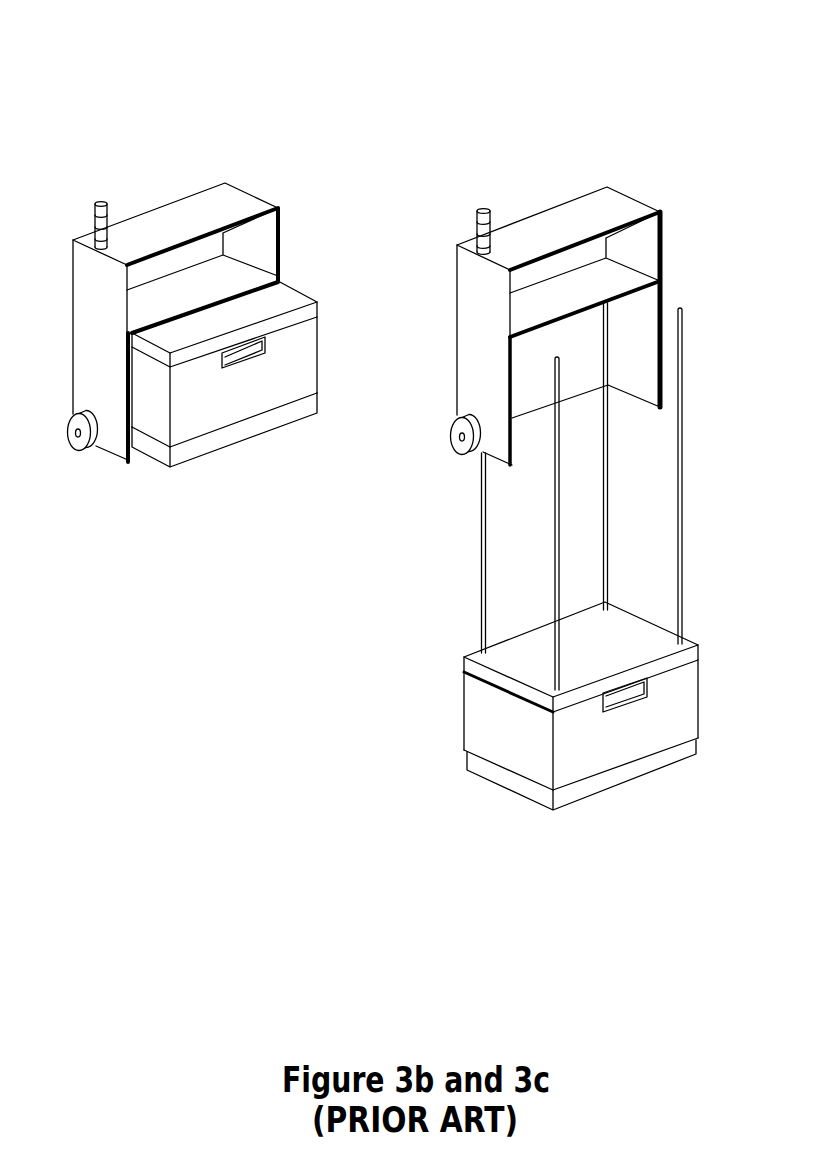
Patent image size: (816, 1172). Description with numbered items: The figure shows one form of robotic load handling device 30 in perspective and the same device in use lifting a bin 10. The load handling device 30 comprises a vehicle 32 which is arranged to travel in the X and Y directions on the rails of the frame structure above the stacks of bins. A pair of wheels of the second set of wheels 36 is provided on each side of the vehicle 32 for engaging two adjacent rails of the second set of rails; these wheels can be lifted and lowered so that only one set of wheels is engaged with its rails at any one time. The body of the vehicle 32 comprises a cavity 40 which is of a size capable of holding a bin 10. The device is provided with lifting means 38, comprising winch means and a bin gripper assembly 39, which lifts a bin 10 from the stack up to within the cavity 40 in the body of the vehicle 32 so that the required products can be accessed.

In FIG. 3B, the bin 10 is at (212, 395).
In FIG. 3C, the bin 10 is at (640, 738).
In FIG. 3B, the load handling device 30 is at (244, 132).
In FIG. 3C, the load handling device 30 is at (614, 130).
In FIG. 3C, the vehicle 32 is at (617, 208).
In FIG. 3B, the second set of wheels 36 is at (80, 441).
In FIG. 3C, the second set of wheels 36 is at (461, 449).
In FIG. 3C, the lifting means 38 is at (480, 602).
In FIG. 3C, the bin gripper assembly 39 is at (640, 637).
In FIG. 3C, the cavity 40 is at (550, 345).